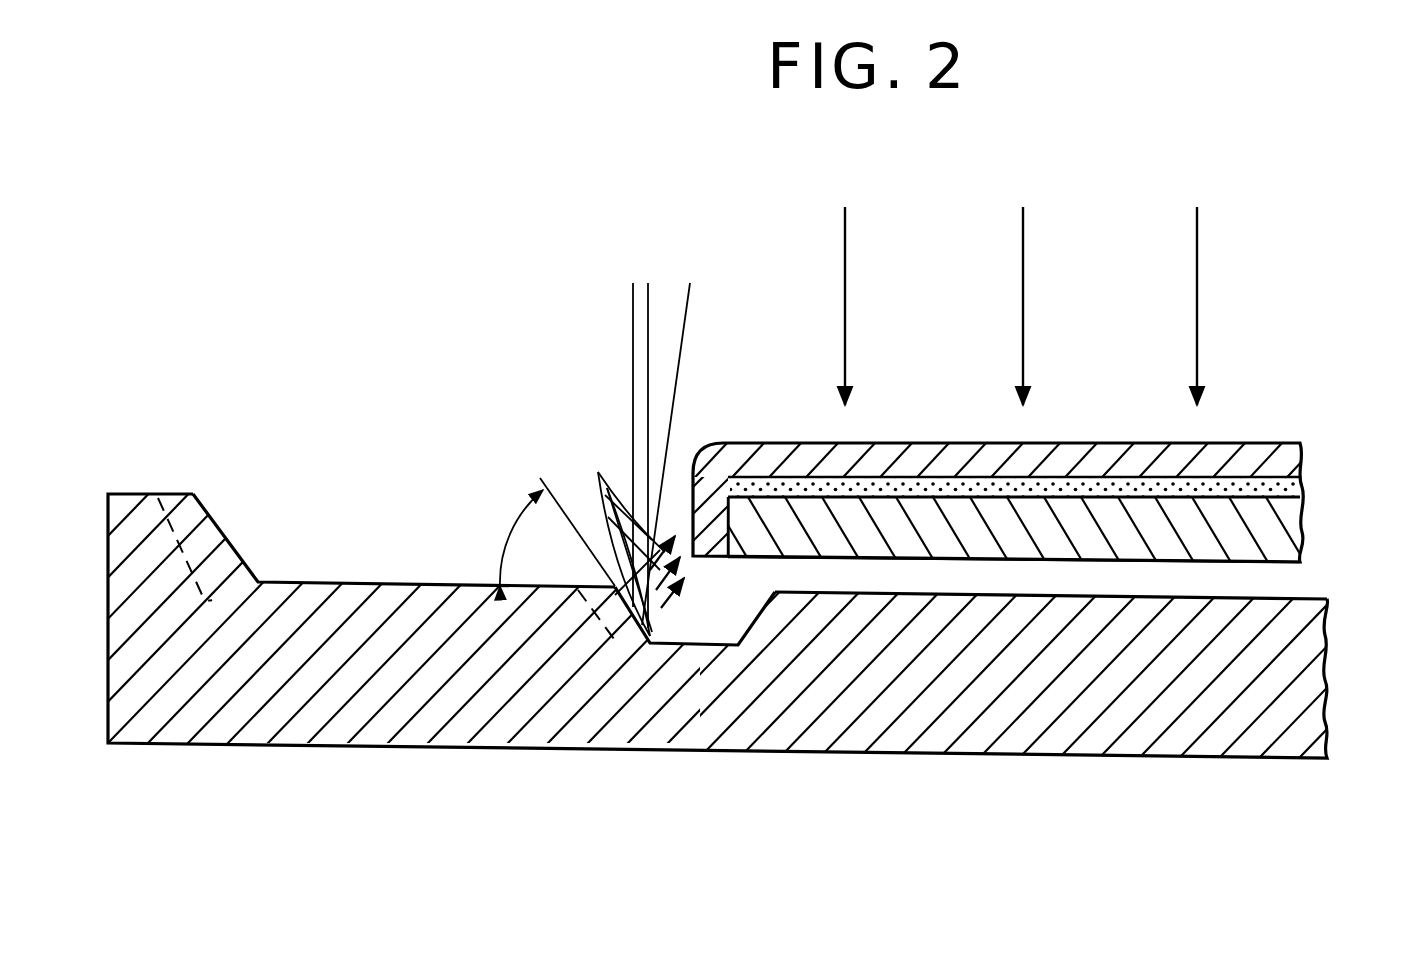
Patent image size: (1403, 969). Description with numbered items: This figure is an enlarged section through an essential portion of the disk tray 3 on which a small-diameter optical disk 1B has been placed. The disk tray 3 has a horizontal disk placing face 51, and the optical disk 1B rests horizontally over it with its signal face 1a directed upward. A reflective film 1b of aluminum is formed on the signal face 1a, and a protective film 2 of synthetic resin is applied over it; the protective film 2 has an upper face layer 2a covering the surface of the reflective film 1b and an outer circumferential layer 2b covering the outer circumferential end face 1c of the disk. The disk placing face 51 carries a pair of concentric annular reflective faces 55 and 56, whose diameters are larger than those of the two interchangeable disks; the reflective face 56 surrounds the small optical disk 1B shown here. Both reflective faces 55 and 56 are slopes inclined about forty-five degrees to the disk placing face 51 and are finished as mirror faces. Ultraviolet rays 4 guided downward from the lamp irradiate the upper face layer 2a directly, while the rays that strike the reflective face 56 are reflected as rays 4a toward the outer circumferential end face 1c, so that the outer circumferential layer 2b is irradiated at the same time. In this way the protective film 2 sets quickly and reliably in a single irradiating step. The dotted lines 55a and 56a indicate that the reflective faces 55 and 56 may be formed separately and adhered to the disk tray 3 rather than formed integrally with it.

The signal face 1a is at (1252, 498).
The reflective film 1b is at (1232, 484).
The optical disk 1B is at (1263, 535).
The outer circumferential end face 1c is at (738, 537).
The protective film 2 is at (1062, 437).
The upper face layer 2a is at (1128, 455).
The outer circumferential layer 2b is at (715, 510).
The disk tray 3 is at (432, 715).
The ultraviolet rays 4 is at (845, 262).
The reflected rays 4a is at (635, 459).
The disk placing face 51 is at (992, 595).
The reflective face 55 is at (216, 528).
The dotted line 55a is at (222, 589).
The reflective face 56 is at (648, 643).
The dotted line 56a is at (615, 646).